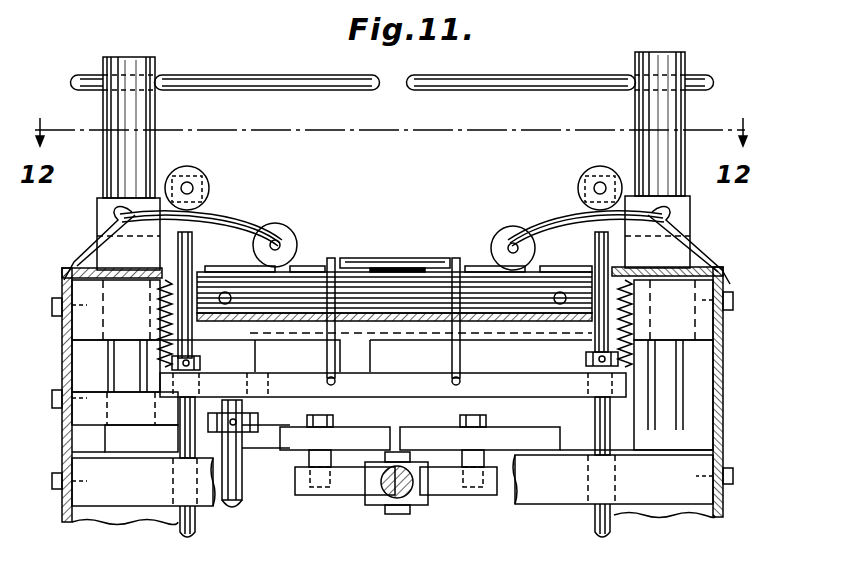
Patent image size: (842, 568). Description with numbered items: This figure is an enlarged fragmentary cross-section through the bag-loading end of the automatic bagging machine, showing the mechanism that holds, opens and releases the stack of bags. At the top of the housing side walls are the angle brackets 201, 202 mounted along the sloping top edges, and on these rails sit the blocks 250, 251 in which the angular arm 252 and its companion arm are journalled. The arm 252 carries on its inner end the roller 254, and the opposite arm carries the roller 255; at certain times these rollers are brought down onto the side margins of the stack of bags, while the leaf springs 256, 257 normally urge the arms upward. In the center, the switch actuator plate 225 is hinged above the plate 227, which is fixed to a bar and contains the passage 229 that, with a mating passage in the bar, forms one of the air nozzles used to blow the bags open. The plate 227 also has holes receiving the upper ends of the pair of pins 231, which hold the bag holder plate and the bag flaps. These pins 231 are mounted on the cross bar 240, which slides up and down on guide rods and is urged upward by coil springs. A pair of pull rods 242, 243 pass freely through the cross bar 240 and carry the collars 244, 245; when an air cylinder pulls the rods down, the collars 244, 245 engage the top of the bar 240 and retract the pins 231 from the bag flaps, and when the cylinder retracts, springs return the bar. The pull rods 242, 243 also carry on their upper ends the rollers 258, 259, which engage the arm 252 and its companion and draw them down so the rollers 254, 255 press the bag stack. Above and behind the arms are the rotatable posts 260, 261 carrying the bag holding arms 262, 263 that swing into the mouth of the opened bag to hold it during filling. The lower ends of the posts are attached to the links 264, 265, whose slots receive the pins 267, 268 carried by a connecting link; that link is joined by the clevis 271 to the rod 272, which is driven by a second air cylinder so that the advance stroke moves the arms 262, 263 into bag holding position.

The angle bracket 201 is at (85, 298).
The angle bracket 202 is at (700, 280).
The switch actuator plate 225 is at (363, 258).
The plate 227 is at (473, 266).
The passage 229 is at (402, 268).
The pins 231 is at (452, 362).
The cross bar 240 is at (512, 387).
The pull rod 242 is at (180, 522).
The pull rod 243 is at (612, 528).
The collar 244 is at (216, 364).
The collar 245 is at (592, 368).
The block 250 is at (103, 211).
The block 251 is at (692, 210).
The angular arm 252 is at (236, 228).
The roller 254 is at (287, 232).
The roller 255 is at (514, 230).
The leaf spring 256 is at (72, 258).
The leaf spring 257 is at (702, 252).
The roller 258 is at (197, 176).
The roller 259 is at (584, 180).
The rotatable post 260 is at (137, 58).
The rotatable post 261 is at (657, 60).
The bag holding arm 262 is at (274, 75).
The bag holding arm 263 is at (532, 75).
The link 264 is at (292, 442).
The link 265 is at (545, 456).
The pin 267 is at (334, 450).
The pin 268 is at (462, 458).
The clevis 271 is at (420, 496).
The rod 272 is at (378, 490).